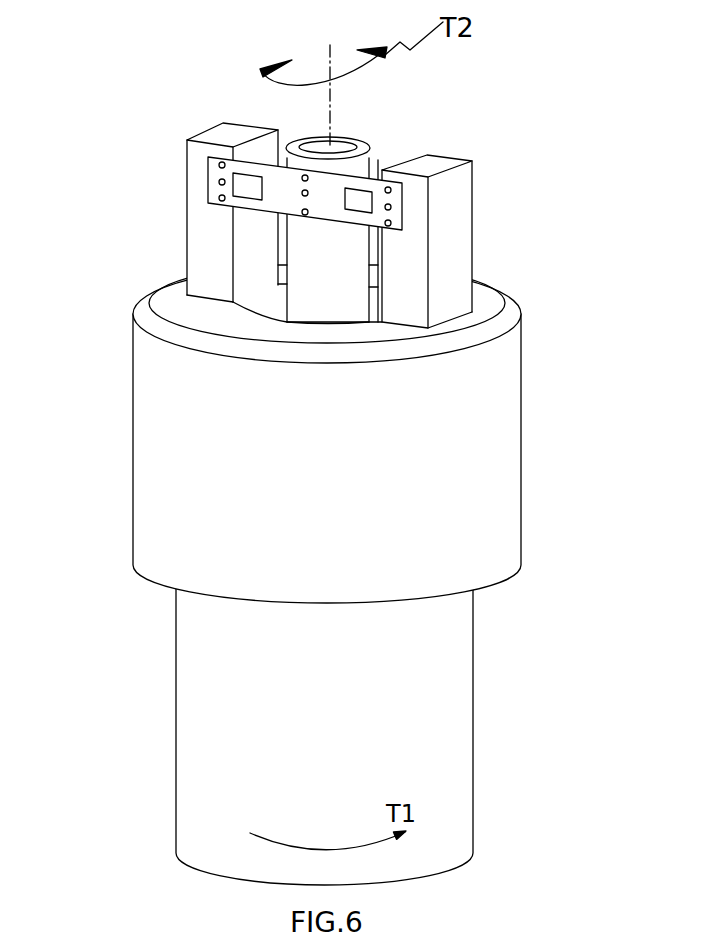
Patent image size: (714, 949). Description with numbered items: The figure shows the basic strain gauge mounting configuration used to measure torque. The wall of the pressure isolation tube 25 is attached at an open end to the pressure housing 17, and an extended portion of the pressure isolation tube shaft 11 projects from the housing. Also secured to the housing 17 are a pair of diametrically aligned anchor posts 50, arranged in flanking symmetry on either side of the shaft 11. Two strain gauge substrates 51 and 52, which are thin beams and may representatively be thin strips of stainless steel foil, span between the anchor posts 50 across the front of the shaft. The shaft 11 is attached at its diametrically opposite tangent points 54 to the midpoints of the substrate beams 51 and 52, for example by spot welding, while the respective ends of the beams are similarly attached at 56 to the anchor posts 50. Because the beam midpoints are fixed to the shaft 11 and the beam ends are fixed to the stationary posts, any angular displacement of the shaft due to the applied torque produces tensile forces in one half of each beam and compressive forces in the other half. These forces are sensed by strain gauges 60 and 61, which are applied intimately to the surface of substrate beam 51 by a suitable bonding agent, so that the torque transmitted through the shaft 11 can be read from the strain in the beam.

The pressure isolation tube shaft 11 is at (342, 287).
The pressure housing 17 is at (480, 460).
The pressure isolation tube 25 is at (428, 738).
The anchor posts 50 is at (213, 242).
The strain gauge substrate 51 is at (308, 155).
The strain gauge substrate 52 is at (412, 152).
The tangent points 54 is at (307, 193).
The beam end attachment points 56 is at (210, 177).
The strain gauge 60 is at (242, 188).
The strain gauge 61 is at (362, 201).